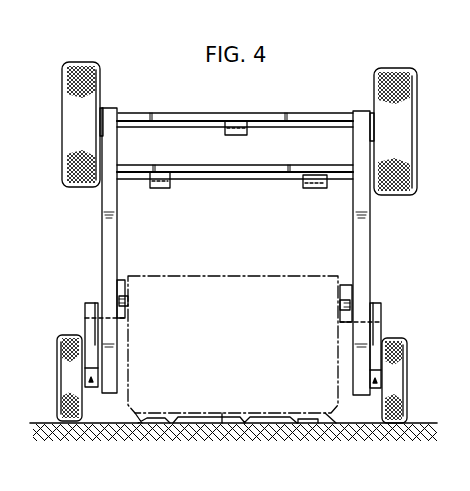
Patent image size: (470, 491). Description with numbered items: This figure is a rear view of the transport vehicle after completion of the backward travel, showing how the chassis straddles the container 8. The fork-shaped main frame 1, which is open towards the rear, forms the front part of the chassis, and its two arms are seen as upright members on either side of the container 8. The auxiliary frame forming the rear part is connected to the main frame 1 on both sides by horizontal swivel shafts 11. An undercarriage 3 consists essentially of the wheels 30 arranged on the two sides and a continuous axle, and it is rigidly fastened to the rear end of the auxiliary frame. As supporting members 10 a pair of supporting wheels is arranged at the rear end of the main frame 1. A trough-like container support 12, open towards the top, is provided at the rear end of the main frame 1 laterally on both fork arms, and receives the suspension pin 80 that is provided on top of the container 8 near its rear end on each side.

The undercarriage 3 is at (112, 78).
The wheels 30 is at (72, 118).
The main frame 1 is at (100, 229).
The container support 12 is at (118, 287).
The horizontal swivel shafts 11 is at (97, 306).
The suspension pin 80 is at (128, 301).
The container 8 is at (213, 283).
The supporting members 10 is at (68, 380).